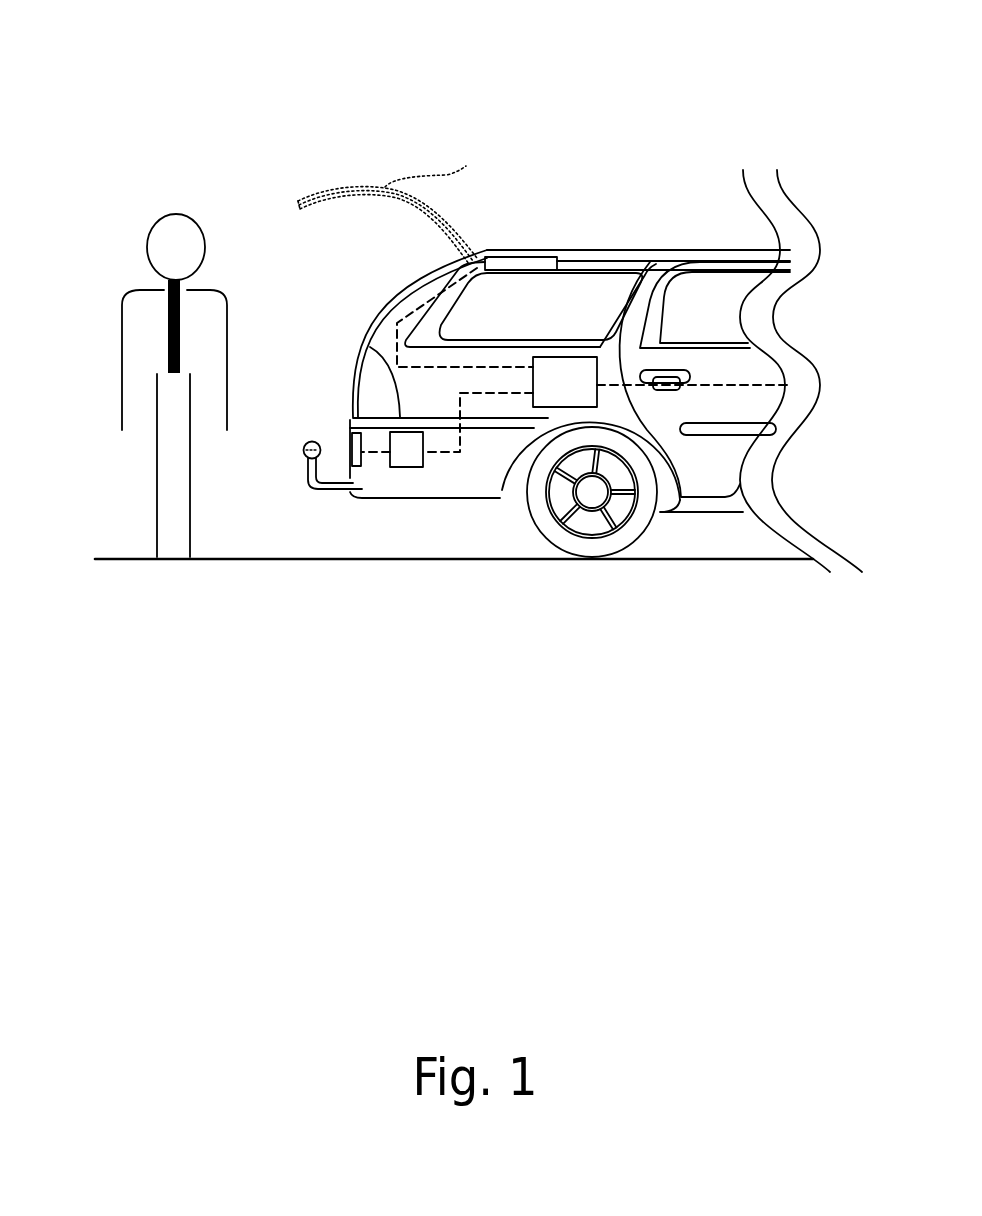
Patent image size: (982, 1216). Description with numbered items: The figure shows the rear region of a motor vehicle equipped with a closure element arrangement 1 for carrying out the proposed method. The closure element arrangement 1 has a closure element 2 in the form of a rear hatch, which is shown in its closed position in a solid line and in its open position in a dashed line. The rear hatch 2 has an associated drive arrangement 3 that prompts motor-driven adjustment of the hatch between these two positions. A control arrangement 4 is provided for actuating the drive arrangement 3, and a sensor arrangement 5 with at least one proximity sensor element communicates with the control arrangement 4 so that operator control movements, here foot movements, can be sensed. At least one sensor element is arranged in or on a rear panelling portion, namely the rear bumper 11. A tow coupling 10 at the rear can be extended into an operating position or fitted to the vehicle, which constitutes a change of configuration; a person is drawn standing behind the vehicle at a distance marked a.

The closure element arrangement 1 is at (362, 142).
The closure element 2 is at (407, 293).
The drive arrangement 3 is at (528, 263).
The control arrangement 4 is at (563, 372).
The sensor arrangement 5 is at (322, 402).
The tow coupling 10 is at (315, 486).
The rear bumper 11 is at (363, 474).
The distance between person and vehicle a is at (350, 450).